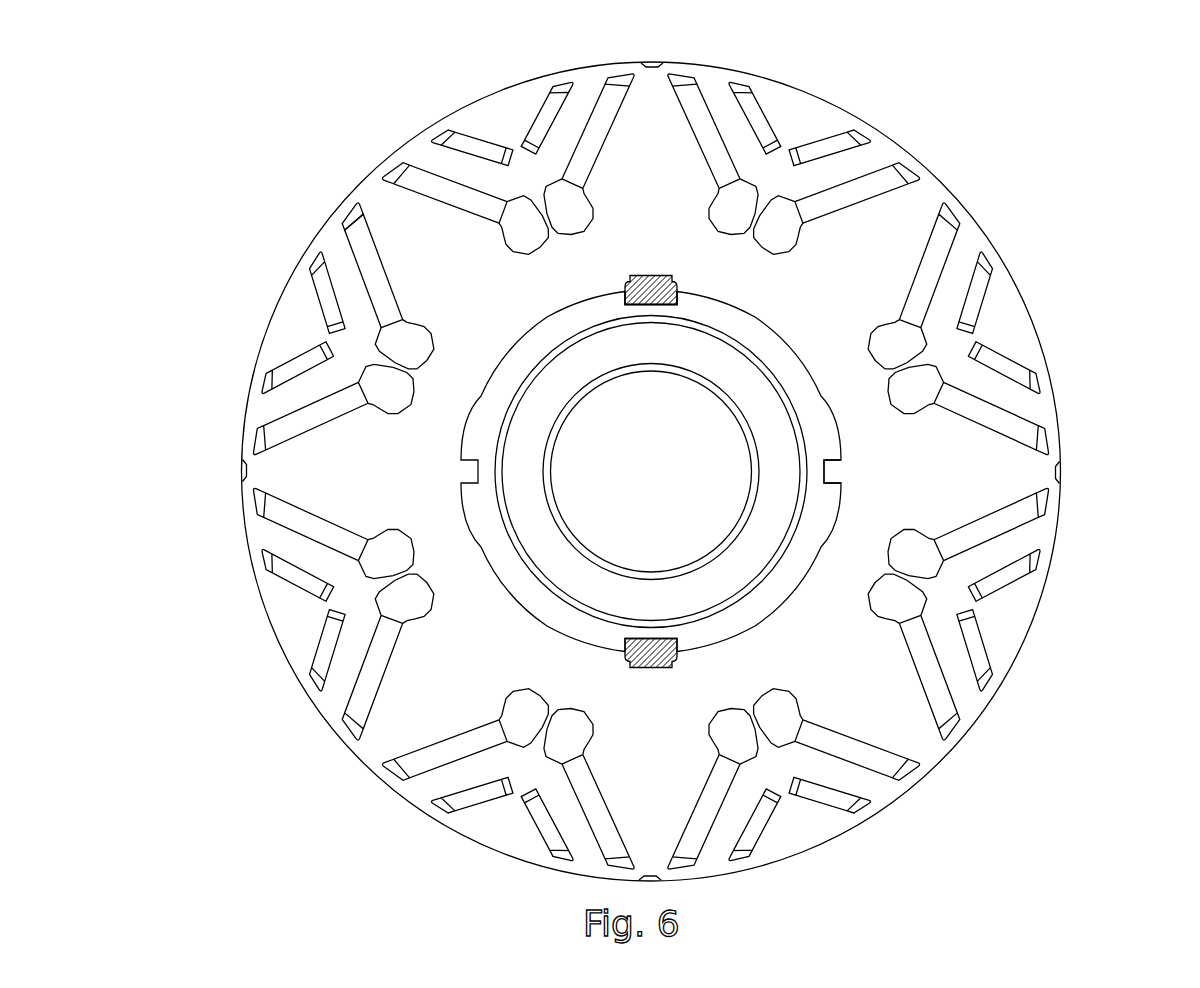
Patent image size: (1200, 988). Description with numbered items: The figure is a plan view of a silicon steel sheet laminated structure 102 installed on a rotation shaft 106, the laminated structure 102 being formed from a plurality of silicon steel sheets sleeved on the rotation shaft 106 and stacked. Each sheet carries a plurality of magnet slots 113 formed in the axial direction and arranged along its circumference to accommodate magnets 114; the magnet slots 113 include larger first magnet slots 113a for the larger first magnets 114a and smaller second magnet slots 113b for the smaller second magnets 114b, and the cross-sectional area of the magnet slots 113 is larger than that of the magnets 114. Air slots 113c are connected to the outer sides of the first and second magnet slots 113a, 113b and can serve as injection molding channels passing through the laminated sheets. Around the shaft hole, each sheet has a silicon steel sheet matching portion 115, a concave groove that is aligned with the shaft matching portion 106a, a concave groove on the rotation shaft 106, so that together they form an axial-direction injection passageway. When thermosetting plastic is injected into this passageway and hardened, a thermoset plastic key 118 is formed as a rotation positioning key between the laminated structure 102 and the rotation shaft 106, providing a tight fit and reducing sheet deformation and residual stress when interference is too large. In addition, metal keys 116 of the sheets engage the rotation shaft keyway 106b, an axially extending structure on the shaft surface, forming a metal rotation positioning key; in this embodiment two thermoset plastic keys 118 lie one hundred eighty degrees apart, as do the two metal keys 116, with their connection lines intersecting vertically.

The silicon steel sheet laminated structure 102 is at (496, 107).
The rotation shaft 106 is at (823, 394).
The shaft matching portion 106a is at (762, 360).
The rotation shaft keyway 106b is at (830, 470).
The magnet slots 113 is at (254, 347).
The first magnet slots 113a is at (355, 238).
The second magnet slots 113b is at (317, 275).
The air slots 113c is at (357, 206).
The magnets 114 is at (249, 602).
The first magnets 114a is at (273, 518).
The second magnets 114b is at (273, 570).
The silicon steel sheet matching portion 115 is at (639, 273).
The metal key 116 is at (835, 472).
The thermoset plastic key 118 is at (664, 278).